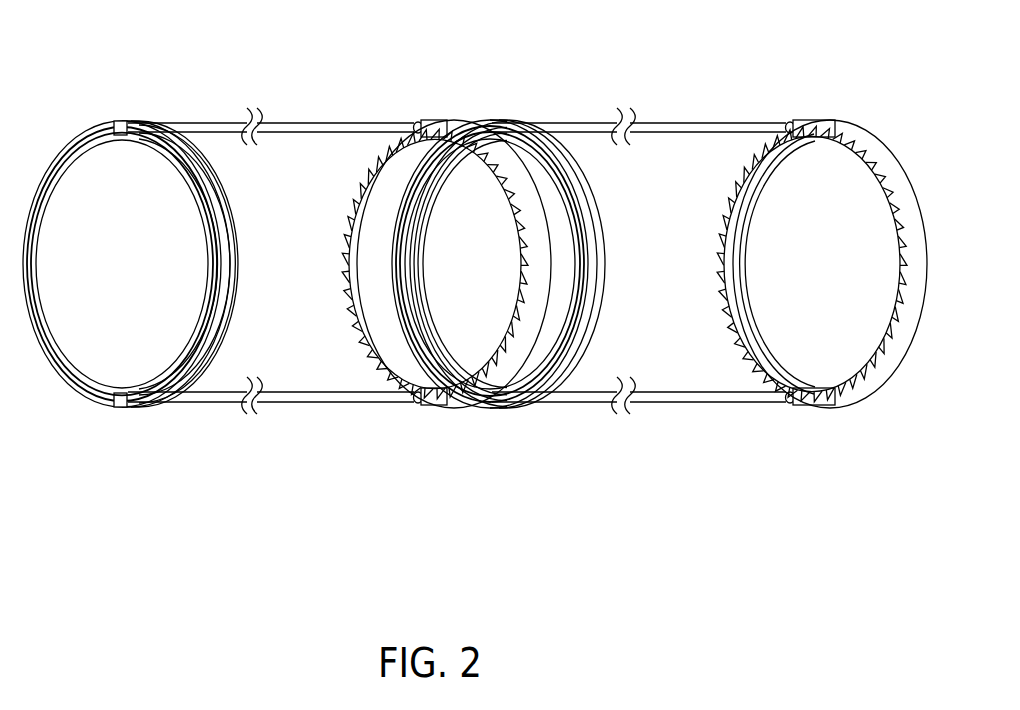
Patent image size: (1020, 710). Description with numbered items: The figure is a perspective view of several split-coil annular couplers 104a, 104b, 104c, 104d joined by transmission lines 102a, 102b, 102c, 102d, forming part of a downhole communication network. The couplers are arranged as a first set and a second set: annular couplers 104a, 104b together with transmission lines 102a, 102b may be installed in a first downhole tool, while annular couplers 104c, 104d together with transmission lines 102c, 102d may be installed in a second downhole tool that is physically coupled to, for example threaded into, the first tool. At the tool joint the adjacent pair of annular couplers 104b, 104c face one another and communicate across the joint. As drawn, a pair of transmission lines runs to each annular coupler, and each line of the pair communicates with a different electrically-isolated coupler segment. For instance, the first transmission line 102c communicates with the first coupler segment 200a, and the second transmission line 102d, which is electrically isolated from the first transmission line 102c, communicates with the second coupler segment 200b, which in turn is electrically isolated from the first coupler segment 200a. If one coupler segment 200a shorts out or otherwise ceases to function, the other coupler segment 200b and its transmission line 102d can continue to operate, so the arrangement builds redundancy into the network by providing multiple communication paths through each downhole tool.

The transmission line 102a is at (662, 127).
The transmission line 102b is at (662, 398).
The first transmission line 102c is at (273, 125).
The second transmission line 102d is at (288, 400).
The annular coupler 104a is at (877, 152).
The annular coupler 104b is at (565, 142).
The annular coupler 104c is at (470, 128).
The annular coupler 104d is at (178, 239).
The first coupler segment 200a is at (33, 250).
The second coupler segment 200b is at (215, 250).